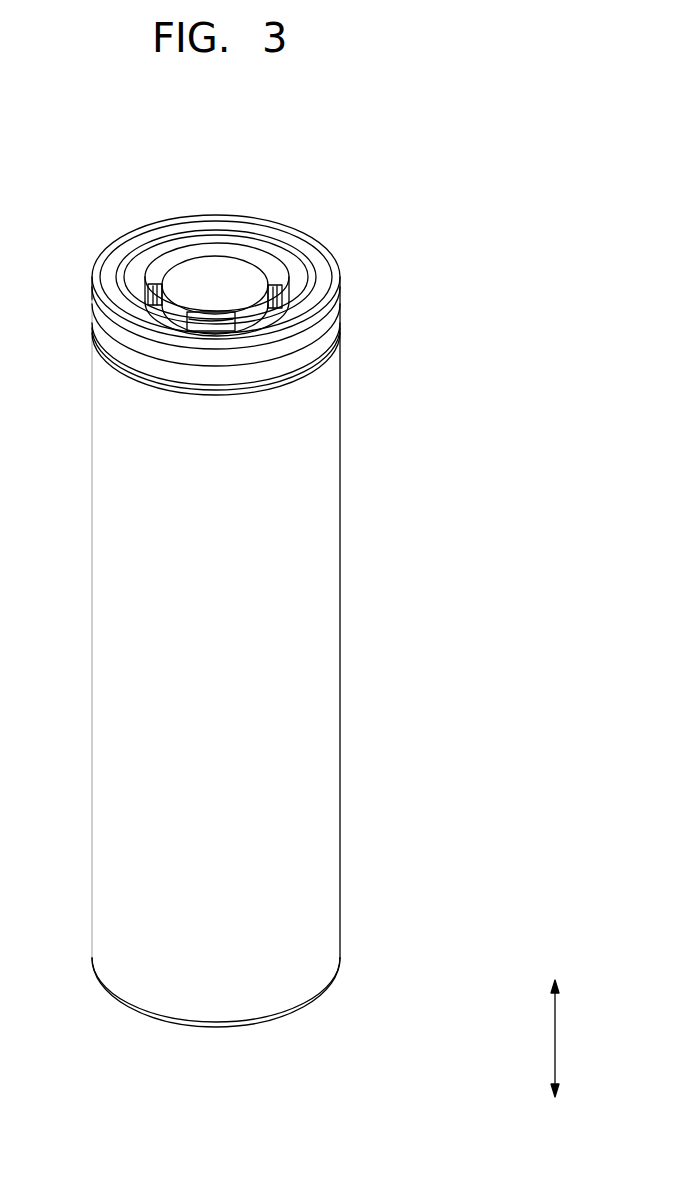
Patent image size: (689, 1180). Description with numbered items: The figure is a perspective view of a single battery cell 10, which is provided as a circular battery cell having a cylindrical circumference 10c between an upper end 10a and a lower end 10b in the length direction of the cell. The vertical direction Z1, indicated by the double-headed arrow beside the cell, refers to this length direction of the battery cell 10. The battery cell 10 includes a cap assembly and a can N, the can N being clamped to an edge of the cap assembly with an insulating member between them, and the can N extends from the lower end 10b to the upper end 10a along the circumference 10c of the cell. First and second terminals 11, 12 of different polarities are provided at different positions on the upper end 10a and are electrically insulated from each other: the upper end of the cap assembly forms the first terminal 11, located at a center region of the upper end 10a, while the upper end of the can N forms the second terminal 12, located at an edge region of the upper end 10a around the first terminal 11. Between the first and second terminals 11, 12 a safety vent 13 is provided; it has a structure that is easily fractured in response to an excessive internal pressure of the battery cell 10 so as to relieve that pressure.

The battery cell 10 is at (273, 590).
The upper end 10a is at (261, 274).
The lower end 10b is at (370, 967).
The circumference 10c is at (303, 662).
The first terminal 11 is at (205, 270).
The second terminal 12 is at (310, 260).
The safety vent 13 is at (153, 303).
The can N is at (325, 553).
The vertical direction Z1 is at (576, 1038).